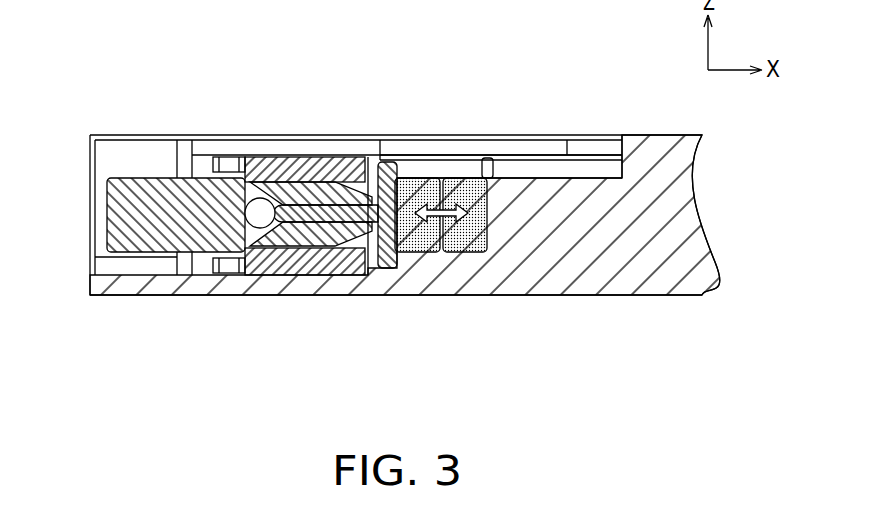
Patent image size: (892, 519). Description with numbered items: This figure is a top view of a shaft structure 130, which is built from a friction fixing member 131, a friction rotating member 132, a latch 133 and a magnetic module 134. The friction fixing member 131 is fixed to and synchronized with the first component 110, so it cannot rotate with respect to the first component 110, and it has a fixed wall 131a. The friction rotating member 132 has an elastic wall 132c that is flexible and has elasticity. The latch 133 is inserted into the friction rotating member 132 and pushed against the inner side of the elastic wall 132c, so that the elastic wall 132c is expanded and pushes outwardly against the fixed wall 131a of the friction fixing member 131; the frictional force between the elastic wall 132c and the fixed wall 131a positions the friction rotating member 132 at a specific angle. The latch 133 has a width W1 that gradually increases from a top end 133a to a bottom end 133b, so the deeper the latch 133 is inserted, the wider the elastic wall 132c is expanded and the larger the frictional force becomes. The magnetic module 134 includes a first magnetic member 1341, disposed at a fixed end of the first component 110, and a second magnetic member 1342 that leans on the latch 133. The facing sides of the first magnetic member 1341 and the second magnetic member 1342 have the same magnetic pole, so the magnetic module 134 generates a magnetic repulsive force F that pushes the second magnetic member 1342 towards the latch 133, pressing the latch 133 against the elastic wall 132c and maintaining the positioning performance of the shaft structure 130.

The first component 110 is at (510, 148).
The shaft structure 130 is at (324, 234).
The friction fixing member 131 is at (289, 167).
The fixed wall 131a is at (272, 157).
The friction rotating member 132 is at (150, 192).
The elastic wall 132c is at (333, 193).
The latch 133 is at (386, 162).
The top end 133a is at (280, 223).
The bottom end 133b is at (347, 223).
The width W1 is at (310, 222).
The magnetic module 134 is at (468, 302).
The first magnetic member 1341 is at (472, 243).
The second magnetic member 1342 is at (417, 242).
The magnetic repulsive force F is at (443, 238).